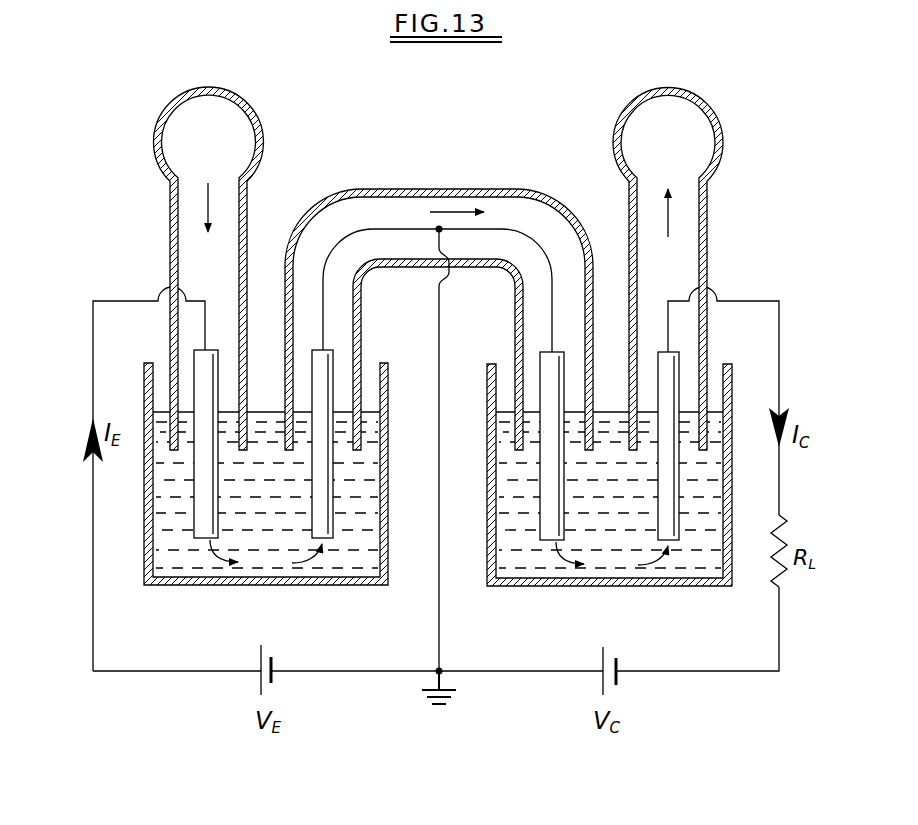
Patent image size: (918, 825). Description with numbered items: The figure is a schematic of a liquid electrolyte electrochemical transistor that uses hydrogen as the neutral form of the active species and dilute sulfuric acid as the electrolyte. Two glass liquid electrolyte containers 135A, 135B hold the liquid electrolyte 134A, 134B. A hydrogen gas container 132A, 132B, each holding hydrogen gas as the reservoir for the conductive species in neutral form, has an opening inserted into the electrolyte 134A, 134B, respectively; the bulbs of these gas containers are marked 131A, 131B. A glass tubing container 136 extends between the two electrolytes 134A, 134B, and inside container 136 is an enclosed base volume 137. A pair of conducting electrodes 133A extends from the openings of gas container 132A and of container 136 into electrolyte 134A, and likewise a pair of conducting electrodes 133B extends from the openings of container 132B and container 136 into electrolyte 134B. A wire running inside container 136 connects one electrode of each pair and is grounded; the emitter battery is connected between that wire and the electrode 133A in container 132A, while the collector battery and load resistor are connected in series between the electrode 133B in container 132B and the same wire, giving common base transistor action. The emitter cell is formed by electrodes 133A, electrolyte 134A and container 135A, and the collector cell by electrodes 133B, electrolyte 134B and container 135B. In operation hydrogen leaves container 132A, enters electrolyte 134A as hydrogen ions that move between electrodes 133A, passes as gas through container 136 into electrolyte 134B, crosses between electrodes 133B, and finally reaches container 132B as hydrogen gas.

The hydrogen reservoir bulb (emitter side) 131A is at (246, 268).
The hydrogen gas container 132A is at (249, 102).
The conducting electrodes 133A is at (312, 487).
The liquid electrolyte 134A is at (334, 558).
The liquid electrolyte container 135A is at (173, 586).
The hydrogen reservoir bulb (collector side) 131B is at (699, 268).
The hydrogen gas container 132B is at (700, 102).
The conducting electrodes 133B is at (658, 507).
The liquid electrolyte 134B is at (682, 563).
The liquid electrolyte container 135B is at (538, 587).
The container 136 is at (432, 184).
The enclosed base volume 137 is at (438, 450).